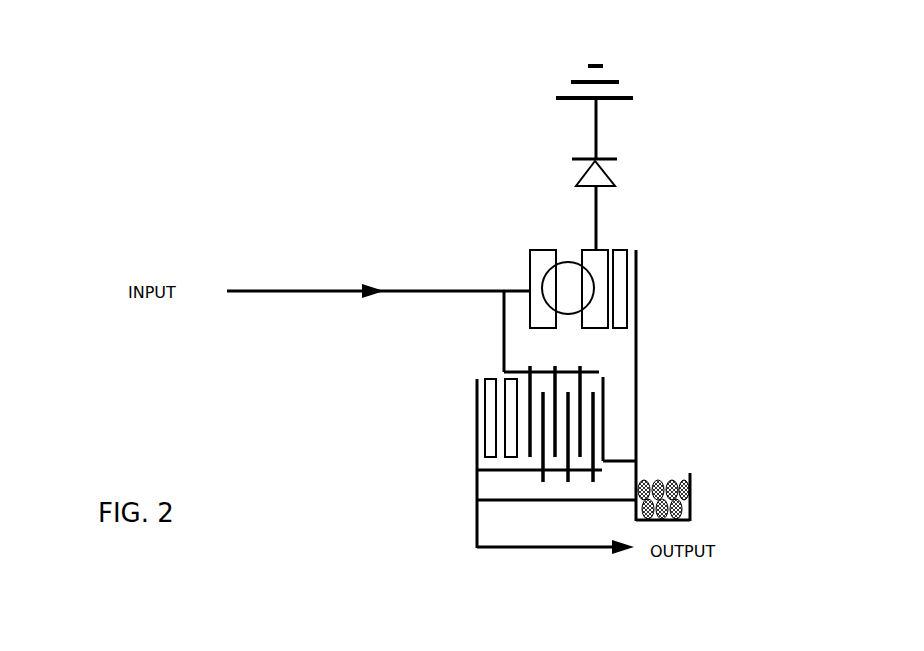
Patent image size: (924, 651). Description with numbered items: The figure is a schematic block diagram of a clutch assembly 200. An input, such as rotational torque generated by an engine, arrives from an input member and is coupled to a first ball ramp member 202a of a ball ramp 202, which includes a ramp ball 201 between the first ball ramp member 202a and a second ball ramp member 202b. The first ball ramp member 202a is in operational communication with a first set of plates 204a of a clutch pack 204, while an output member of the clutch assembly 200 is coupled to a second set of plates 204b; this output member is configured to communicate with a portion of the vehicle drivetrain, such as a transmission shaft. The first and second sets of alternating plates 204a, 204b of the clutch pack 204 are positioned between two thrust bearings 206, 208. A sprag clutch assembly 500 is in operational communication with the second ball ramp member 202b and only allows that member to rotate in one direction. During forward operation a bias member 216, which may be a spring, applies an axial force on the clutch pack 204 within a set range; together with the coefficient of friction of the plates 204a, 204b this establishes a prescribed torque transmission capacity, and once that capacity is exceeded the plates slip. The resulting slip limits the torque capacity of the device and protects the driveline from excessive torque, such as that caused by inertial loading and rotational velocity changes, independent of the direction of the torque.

The clutch assembly 200 is at (803, 124).
The ramp ball 201 is at (564, 274).
The ball ramp 202 is at (534, 230).
The first ball ramp member 202a is at (532, 262).
The second ball ramp member 202b is at (604, 252).
The clutch pack 204 is at (510, 486).
The first set of plates 204a is at (573, 375).
The second set of plates 204b is at (548, 473).
The thrust bearing 206 is at (490, 383).
The thrust bearing 208 is at (622, 273).
The bias member 216 is at (668, 473).
The sprag clutch assembly 500 is at (610, 171).